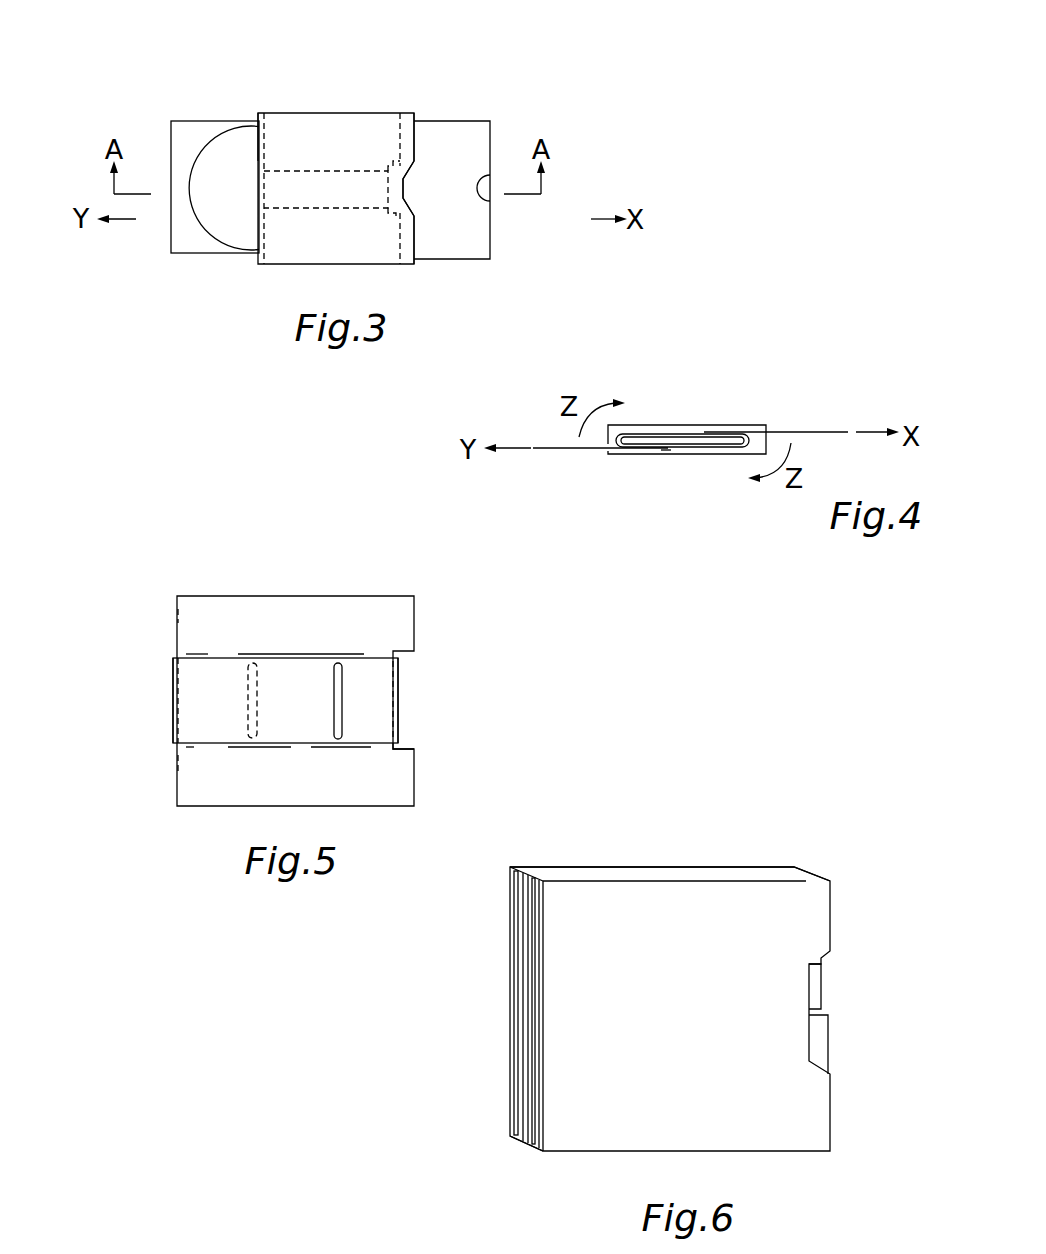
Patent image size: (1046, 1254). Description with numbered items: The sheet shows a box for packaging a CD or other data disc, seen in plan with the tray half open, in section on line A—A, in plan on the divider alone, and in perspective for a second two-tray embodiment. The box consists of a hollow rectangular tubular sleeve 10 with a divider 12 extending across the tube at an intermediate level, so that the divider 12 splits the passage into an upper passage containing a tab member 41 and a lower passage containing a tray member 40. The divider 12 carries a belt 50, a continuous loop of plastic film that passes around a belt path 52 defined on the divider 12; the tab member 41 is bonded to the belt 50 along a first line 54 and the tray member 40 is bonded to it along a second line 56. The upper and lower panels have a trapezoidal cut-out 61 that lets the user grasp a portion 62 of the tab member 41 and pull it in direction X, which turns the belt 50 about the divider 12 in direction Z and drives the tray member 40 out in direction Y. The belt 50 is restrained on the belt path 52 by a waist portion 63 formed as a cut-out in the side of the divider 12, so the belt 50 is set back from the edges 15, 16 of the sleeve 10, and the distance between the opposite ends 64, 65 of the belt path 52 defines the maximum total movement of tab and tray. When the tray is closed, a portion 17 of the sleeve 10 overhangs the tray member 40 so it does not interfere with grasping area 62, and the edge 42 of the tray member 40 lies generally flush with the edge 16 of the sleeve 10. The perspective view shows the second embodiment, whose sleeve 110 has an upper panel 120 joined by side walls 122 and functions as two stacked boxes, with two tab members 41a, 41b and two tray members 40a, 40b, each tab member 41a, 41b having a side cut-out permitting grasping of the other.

In FIG. 3, the sleeve 10 is at (329, 102).
In FIG. 4, the divider 12 is at (638, 438).
In FIG. 5, the divider 12 is at (372, 618).
In FIG. 3, the edge of the sleeve 15 is at (413, 143).
In FIG. 3, the edge of the sleeve 16 is at (257, 153).
In FIG. 3, the overhanging portion of the sleeve 17 is at (407, 258).
In FIG. 3, the tray member 40 is at (207, 253).
In FIG. 4, the tray member 40 is at (560, 447).
In FIG. 3, the tab member 41 is at (470, 258).
In FIG. 4, the tab member 41 is at (807, 431).
In FIG. 3, the edge of the tray member 42 is at (170, 120).
In FIG. 3, the belt 50 is at (363, 170).
In FIG. 4, the belt 50 is at (723, 448).
In FIG. 5, the belt 50 is at (208, 668).
In FIG. 5, the belt path 52 is at (290, 655).
In FIG. 4, the first line 54 is at (715, 432).
In FIG. 5, the first line 54 is at (342, 700).
In FIG. 4, the second line 56 is at (663, 450).
In FIG. 5, the second line 56 is at (247, 707).
In FIG. 3, the trapezoidal cut-out 61 is at (403, 187).
In FIG. 3, the portion of the tab member 62 is at (484, 196).
In FIG. 3, the waist portion 63 is at (393, 212).
In FIG. 5, the waist portion 63 is at (396, 752).
In FIG. 5, the end of the belt path 64 is at (394, 675).
In FIG. 5, the end of the belt path 65 is at (172, 683).
In FIG. 6, the sleeve 110 is at (710, 852).
In FIG. 6, the upper panel 120 is at (795, 907).
In FIG. 6, the side walls 122 is at (597, 873).
In FIG. 6, the tray member 40a is at (533, 1113).
In FIG. 6, the tray member 40b is at (512, 1018).
In FIG. 6, the tab member 41a is at (817, 1047).
In FIG. 6, the tab member 41b is at (815, 987).